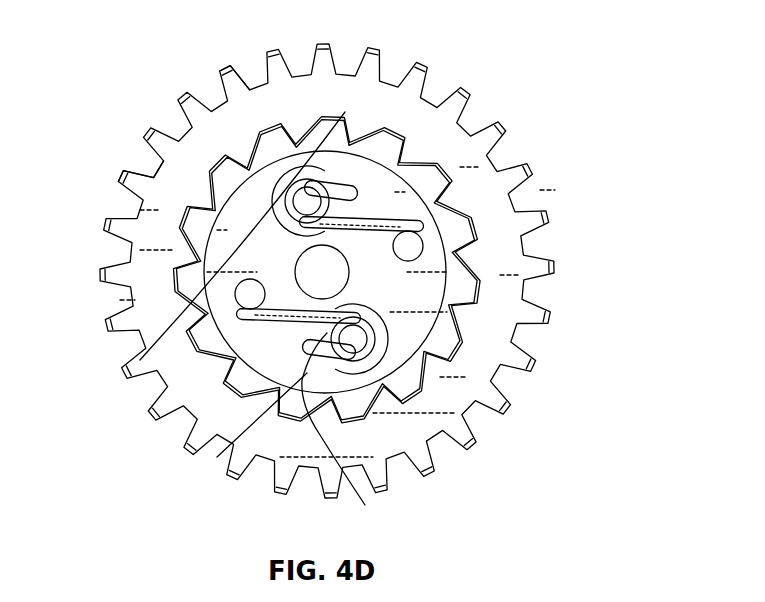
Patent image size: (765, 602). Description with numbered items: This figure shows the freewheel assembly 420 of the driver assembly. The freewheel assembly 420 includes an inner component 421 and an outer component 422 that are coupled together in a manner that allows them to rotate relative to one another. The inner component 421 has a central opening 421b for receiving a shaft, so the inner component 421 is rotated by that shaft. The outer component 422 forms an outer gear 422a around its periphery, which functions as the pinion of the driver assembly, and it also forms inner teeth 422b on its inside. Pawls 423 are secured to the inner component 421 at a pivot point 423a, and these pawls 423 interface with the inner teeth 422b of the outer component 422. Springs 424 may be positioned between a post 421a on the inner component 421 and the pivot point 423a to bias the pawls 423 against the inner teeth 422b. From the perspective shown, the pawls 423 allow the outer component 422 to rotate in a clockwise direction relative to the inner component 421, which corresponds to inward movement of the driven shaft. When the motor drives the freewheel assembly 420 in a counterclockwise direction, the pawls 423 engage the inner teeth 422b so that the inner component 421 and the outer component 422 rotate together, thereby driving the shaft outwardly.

The freewheel assembly 420 is at (546, 46).
The inner component 421 is at (430, 288).
The post 421a is at (445, 250).
The opening 421b is at (322, 275).
The outer component 422 is at (205, 132).
The outer gear 422a is at (140, 192).
The inner teeth 422b is at (237, 63).
The pawls 423 is at (250, 294).
The pivot point 423a is at (350, 115).
The springs 424 is at (374, 220).